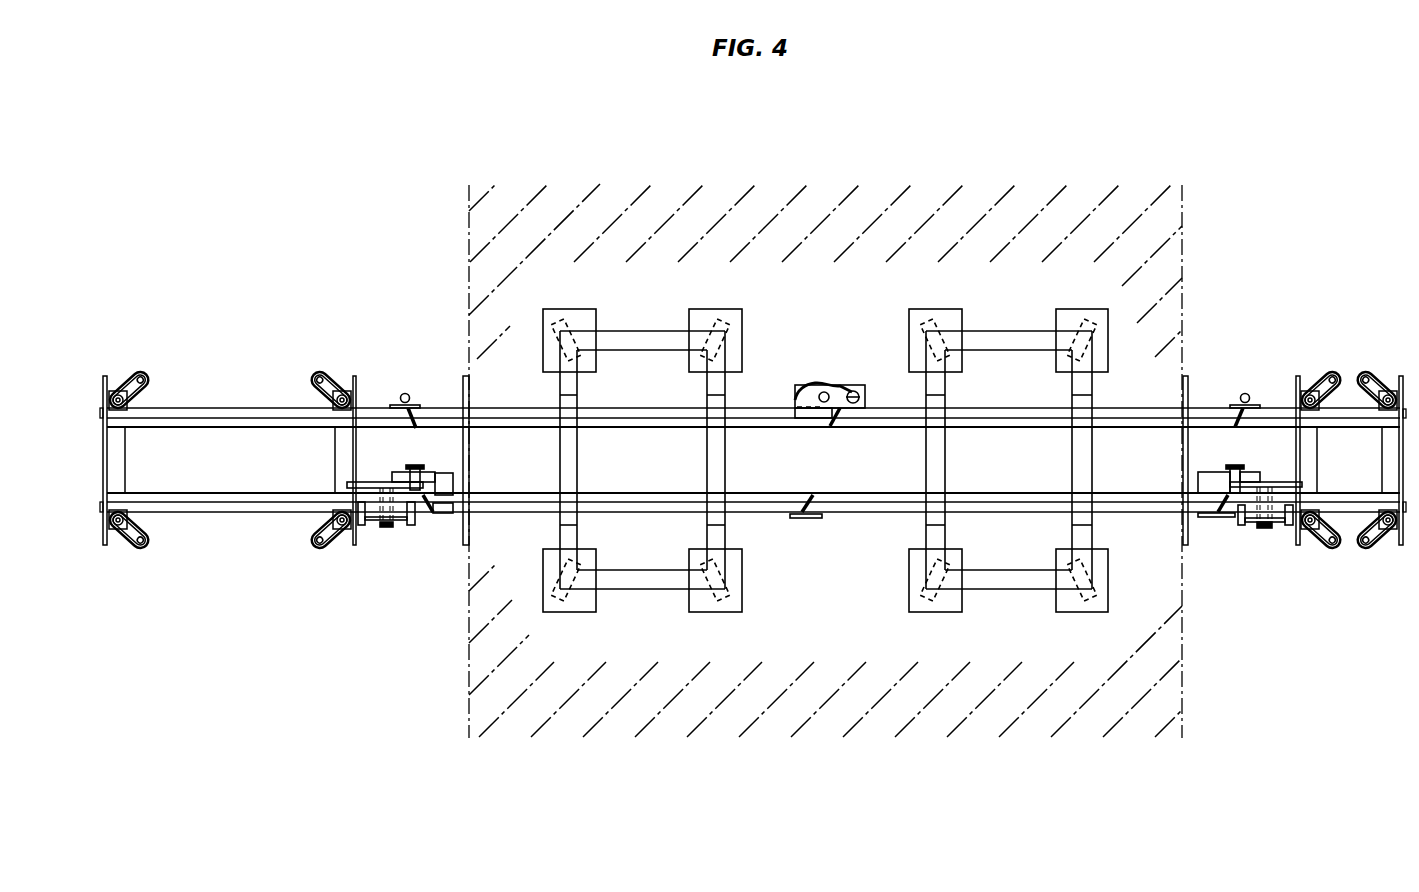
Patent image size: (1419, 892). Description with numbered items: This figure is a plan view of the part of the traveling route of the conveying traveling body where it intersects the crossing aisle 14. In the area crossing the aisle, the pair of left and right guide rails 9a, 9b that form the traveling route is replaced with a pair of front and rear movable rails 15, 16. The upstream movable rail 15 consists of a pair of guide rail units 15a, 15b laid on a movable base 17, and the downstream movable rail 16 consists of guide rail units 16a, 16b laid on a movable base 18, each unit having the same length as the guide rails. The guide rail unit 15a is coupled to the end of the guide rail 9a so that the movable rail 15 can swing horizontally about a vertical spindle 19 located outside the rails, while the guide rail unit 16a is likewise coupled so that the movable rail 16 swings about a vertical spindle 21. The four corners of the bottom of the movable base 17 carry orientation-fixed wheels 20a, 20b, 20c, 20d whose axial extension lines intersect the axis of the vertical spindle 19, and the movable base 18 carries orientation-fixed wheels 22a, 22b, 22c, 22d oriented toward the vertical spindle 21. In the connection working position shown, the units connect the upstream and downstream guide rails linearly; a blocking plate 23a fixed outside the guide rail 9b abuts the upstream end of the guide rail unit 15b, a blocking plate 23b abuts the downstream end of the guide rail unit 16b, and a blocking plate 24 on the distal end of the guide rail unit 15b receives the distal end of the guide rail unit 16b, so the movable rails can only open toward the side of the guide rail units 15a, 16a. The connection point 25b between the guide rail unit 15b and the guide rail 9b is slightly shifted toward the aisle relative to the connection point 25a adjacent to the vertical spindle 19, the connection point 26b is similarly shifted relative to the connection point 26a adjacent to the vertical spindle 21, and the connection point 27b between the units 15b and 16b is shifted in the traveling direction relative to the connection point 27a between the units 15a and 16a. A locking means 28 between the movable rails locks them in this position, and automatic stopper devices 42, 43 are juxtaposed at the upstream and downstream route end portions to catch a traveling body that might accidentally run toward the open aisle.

The crossing aisle 14 is at (538, 213).
The guide rail 9a is at (220, 415).
The guide rail 9b is at (215, 505).
The movable rail 15 is at (1062, 471).
The guide rail unit 15a is at (1010, 417).
The guide rail unit 15b is at (1005, 507).
The movable rail 16 is at (597, 463).
The guide rail unit 16a is at (638, 417).
The guide rail unit 16b is at (648, 507).
The movable base 17 is at (984, 336).
The movable base 18 is at (612, 337).
The vertical spindle 19 is at (1245, 394).
The orientation-fixed wheel 20a is at (1085, 318).
The orientation-fixed wheel 20b is at (935, 320).
The orientation-fixed wheel 20c is at (1070, 562).
The orientation-fixed wheel 20d is at (930, 592).
The vertical spindle 21 is at (405, 394).
The orientation-fixed wheel 22a is at (560, 330).
The orientation-fixed wheel 22b is at (718, 330).
The orientation-fixed wheel 22c is at (560, 592).
The orientation-fixed wheel 22d is at (706, 592).
The blocking plate 23a is at (1202, 518).
The blocking plate 23b is at (445, 515).
The blocking plate 24 is at (795, 520).
The connection point 25a is at (1235, 415).
The connection point 25b is at (1210, 508).
The connection point 26a is at (417, 415).
The connection point 26b is at (420, 522).
The connection point 27a is at (842, 417).
The connection point 27b is at (802, 503).
The locking means 28 is at (838, 385).
The automatic stopper device 42 is at (1262, 468).
The automatic stopper device 43 is at (380, 463).